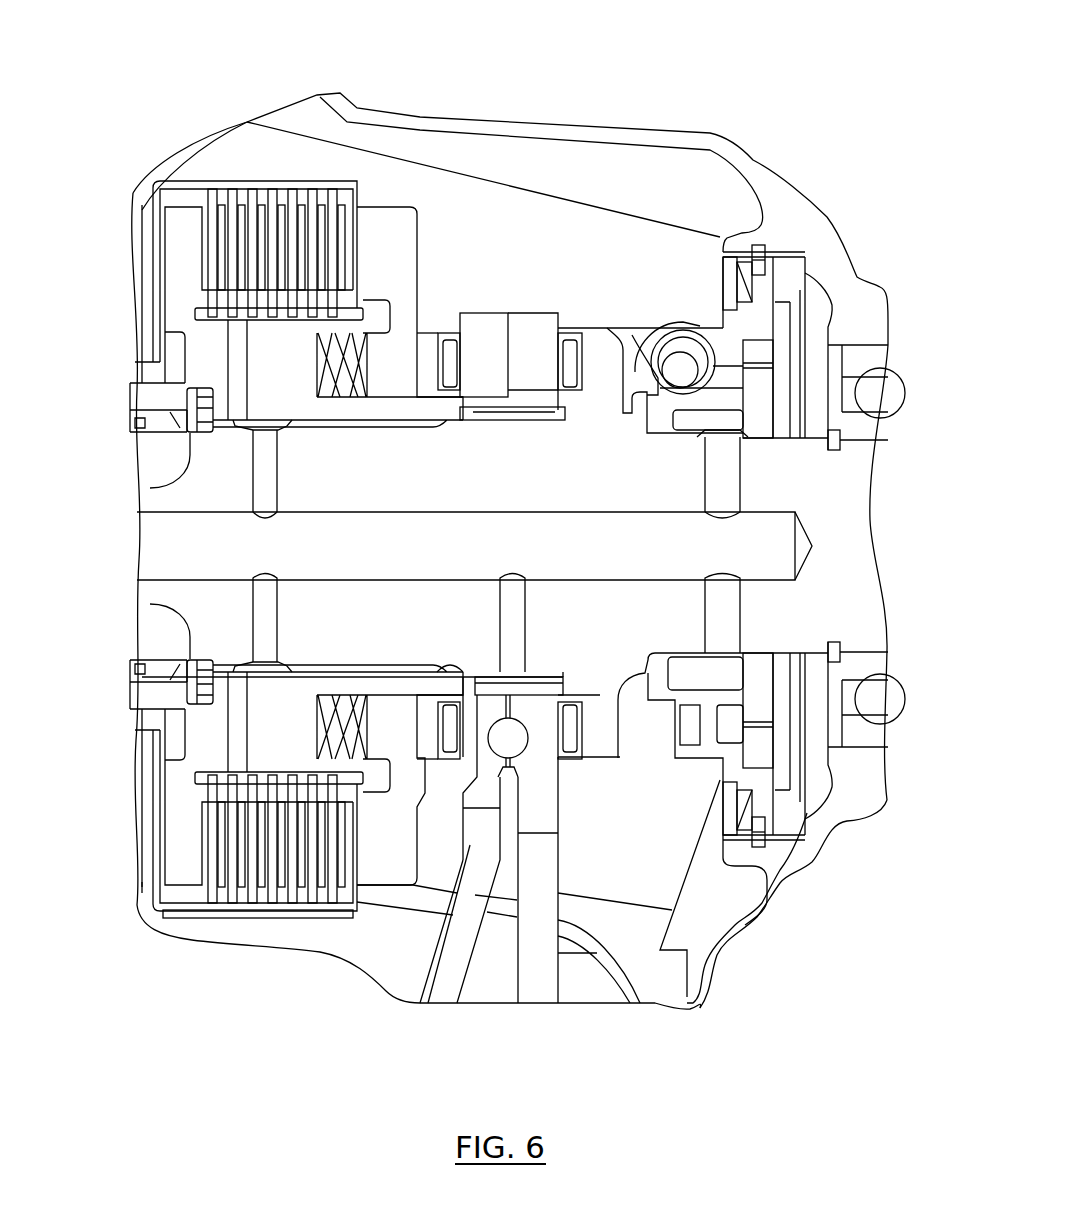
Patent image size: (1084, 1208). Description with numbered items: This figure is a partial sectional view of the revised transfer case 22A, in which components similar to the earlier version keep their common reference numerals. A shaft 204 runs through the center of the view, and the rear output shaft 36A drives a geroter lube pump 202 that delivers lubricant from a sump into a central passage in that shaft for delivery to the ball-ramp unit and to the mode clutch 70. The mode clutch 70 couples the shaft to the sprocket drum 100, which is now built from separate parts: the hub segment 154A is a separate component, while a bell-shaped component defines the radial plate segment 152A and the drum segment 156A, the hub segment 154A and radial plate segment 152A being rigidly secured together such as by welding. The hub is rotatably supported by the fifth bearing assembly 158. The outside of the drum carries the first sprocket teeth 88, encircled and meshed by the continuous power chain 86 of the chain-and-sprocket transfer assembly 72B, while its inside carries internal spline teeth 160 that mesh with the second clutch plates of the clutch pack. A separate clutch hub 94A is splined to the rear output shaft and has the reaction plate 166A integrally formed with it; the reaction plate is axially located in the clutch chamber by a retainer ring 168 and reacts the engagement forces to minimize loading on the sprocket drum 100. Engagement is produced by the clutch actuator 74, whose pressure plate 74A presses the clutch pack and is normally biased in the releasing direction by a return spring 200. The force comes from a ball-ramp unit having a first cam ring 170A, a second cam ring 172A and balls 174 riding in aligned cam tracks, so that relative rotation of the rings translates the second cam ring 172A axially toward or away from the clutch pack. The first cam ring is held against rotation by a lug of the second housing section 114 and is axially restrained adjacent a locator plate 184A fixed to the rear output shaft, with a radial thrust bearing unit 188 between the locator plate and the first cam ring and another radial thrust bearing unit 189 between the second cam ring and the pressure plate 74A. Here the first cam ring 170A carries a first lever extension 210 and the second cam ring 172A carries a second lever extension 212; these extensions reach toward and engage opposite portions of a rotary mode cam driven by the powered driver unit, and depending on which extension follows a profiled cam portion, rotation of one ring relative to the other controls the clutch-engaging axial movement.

The transfer case 22A is at (822, 122).
The rear output shaft 36A is at (845, 541).
The mode clutch 70 is at (207, 320).
The second clutch assembly 72B is at (588, 810).
The brake assembly 74 is at (530, 265).
The pressure plate 74A is at (404, 222).
The continuous power chain 86 is at (265, 795).
The first sprocket teeth 88 is at (268, 918).
The clutch hub 94A is at (378, 418).
The sprocket drum 100 is at (150, 848).
The second housing section 114 is at (760, 939).
The radial plate segment 152A is at (146, 782).
The hub segment 154A is at (142, 372).
The drum segment 156A is at (187, 905).
The fifth bearing assembly 158 is at (152, 433).
The internal spline teeth 160 is at (166, 893).
The reaction plate 166A is at (182, 226).
The retainer ring 168 is at (150, 488).
The first cam ring 170A is at (543, 325).
The second cam ring 172A is at (483, 338).
The balls 174 is at (518, 740).
The bearing 184A is at (603, 350).
The radial thrust bearing unit 188 is at (578, 718).
The radial thrust bearing unit 189 is at (448, 716).
The return spring 200 is at (333, 398).
The geroter lube pump 202 is at (800, 744).
The shaft 204 is at (572, 518).
The first lever extension 210 is at (537, 992).
The second lever extension 212 is at (447, 985).